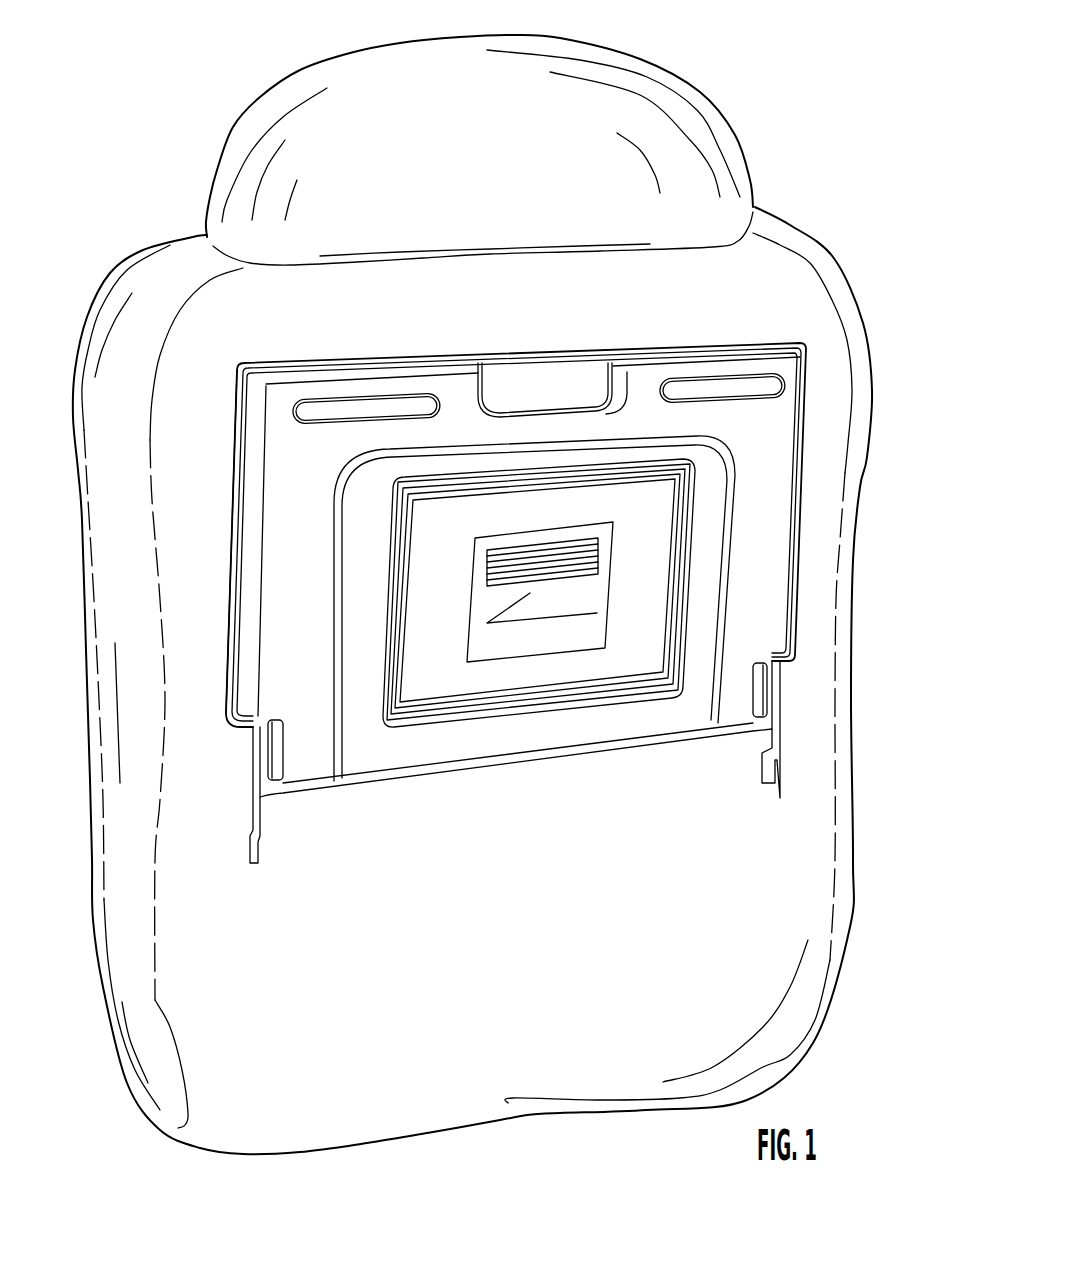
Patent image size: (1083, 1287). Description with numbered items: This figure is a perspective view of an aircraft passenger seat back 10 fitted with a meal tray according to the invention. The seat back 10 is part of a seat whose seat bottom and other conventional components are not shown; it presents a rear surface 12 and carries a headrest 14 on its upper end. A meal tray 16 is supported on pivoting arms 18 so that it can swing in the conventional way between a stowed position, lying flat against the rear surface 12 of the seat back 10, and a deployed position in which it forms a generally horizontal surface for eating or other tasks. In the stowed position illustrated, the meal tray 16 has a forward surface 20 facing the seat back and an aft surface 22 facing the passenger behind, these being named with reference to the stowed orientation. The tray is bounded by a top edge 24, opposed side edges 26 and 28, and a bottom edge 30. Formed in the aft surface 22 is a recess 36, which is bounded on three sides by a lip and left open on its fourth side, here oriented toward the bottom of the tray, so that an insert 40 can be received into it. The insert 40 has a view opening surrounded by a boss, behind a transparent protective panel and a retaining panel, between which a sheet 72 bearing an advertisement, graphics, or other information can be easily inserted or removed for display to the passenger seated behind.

The seat back 10 is at (778, 228).
The rear surface 12 is at (167, 373).
The headrest 14 is at (673, 77).
The meal tray 16 is at (786, 330).
The pivoting arms 18 is at (250, 754).
The forward surface 20 is at (285, 508).
The aft surface 22 is at (757, 442).
The top edge 24 is at (280, 367).
The side edge 26 is at (237, 619).
The side edge 28 is at (735, 573).
The bottom edge 30 is at (497, 763).
The recess 36 is at (663, 640).
The insert 40 is at (737, 520).
The sheet 72 is at (630, 573).